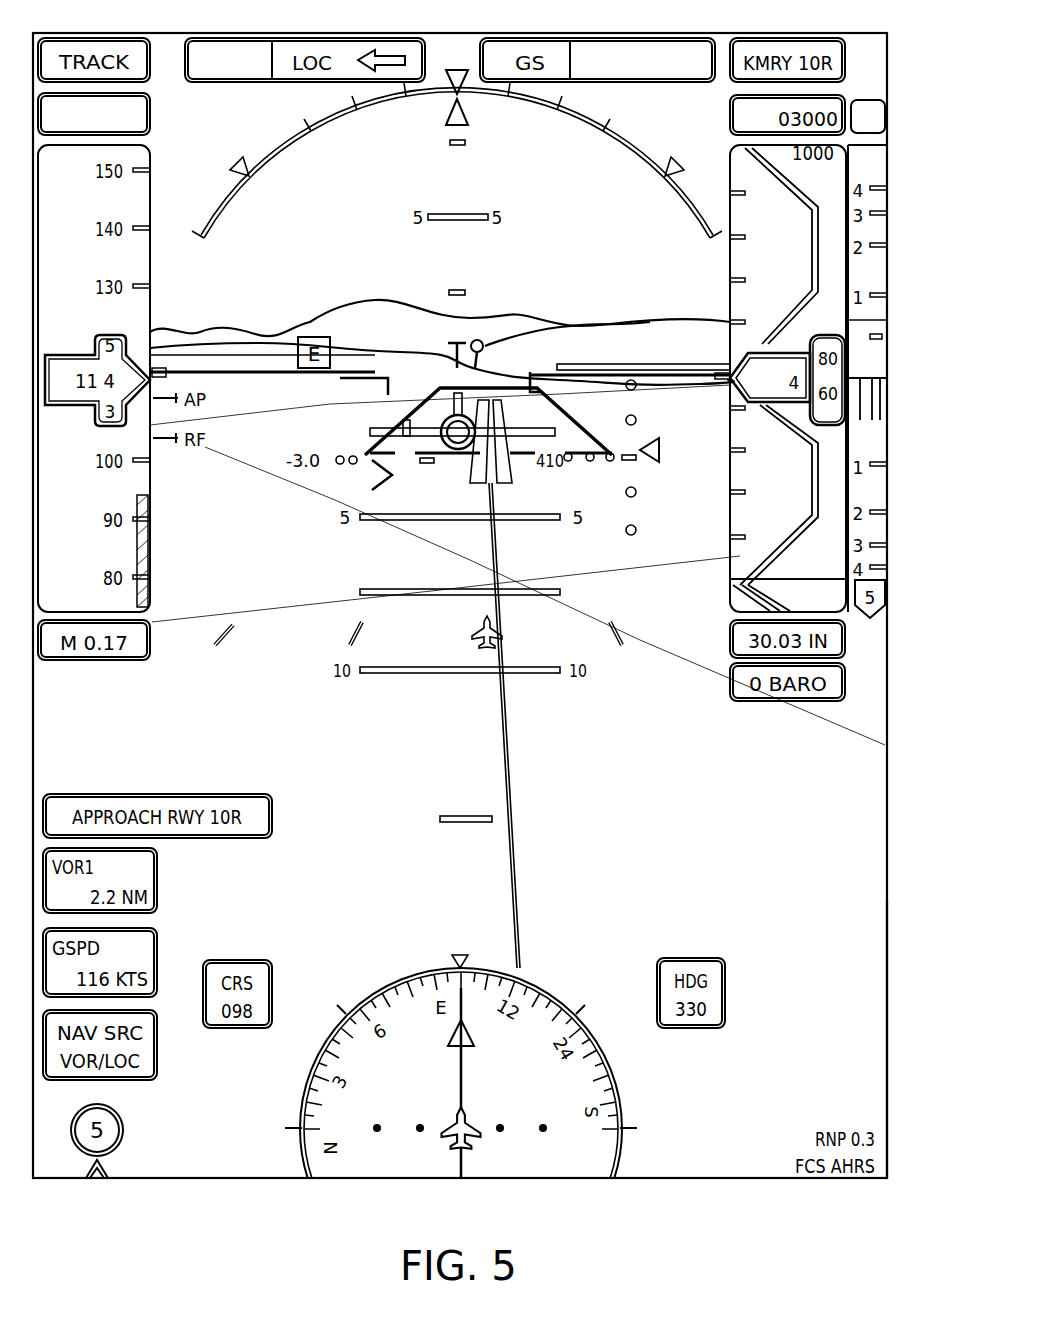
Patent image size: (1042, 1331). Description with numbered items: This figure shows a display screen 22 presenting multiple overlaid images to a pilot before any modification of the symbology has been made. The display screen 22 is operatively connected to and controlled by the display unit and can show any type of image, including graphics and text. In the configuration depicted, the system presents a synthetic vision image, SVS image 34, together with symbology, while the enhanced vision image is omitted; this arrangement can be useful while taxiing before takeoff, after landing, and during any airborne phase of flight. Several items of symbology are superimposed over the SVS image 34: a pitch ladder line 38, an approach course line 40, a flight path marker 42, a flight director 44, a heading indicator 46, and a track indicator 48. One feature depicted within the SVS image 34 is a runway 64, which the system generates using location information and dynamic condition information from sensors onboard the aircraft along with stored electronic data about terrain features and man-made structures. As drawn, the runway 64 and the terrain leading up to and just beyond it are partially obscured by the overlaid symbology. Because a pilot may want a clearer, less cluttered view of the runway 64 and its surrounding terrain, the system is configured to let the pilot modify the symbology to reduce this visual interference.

The display screen 22 is at (200, 1178).
The SVS image 34 is at (887, 955).
The pitch ladder line 38 is at (533, 675).
The approach course line 40 is at (512, 790).
The flight path marker 42 is at (418, 447).
The flight director 44 is at (375, 415).
The heading indicator 46 is at (487, 320).
The track indicator 48 is at (450, 345).
The runway 64 is at (482, 493).